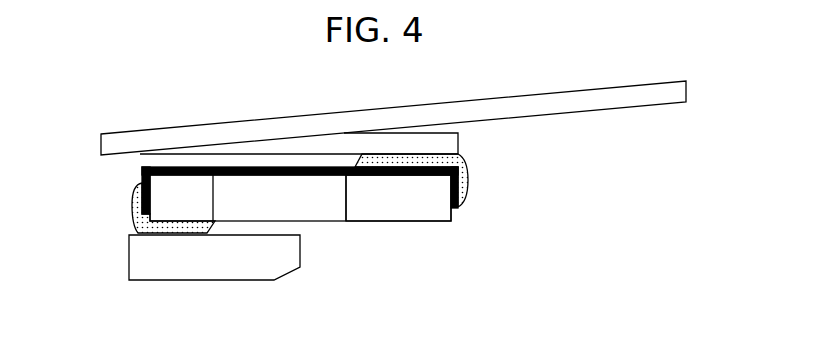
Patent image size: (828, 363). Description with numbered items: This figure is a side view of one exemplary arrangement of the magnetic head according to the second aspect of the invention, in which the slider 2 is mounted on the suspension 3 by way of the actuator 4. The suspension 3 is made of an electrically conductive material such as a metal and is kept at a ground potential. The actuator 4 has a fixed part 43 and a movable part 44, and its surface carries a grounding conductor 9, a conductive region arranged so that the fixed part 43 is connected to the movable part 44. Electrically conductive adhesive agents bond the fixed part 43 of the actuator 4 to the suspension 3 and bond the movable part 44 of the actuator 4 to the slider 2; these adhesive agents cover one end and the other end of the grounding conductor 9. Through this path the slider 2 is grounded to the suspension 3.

The slider 2 is at (137, 268).
The suspension 3 is at (190, 129).
The actuator 4 is at (425, 237).
The grounding conductor 9 is at (148, 167).
The fixed part 43 is at (430, 209).
The movable part 44 is at (163, 213).